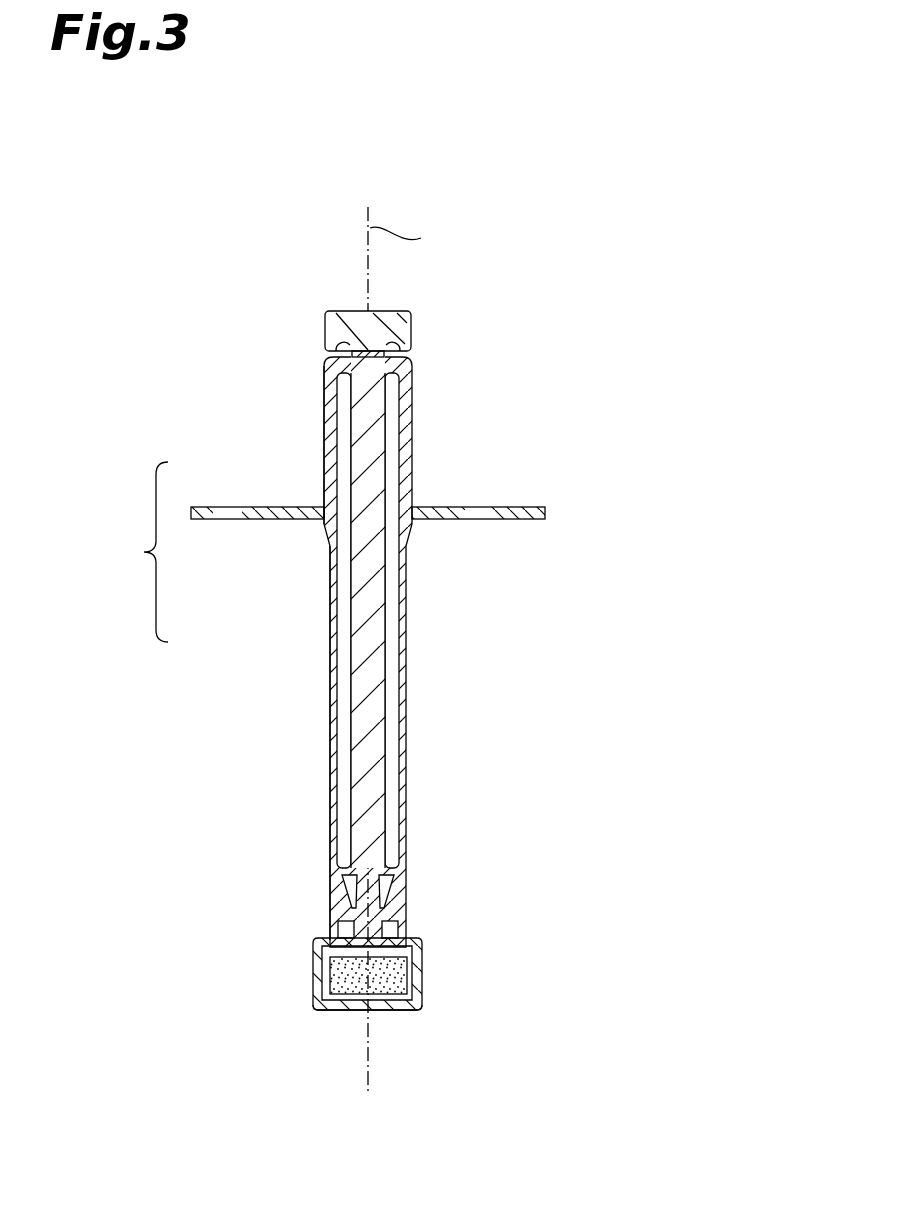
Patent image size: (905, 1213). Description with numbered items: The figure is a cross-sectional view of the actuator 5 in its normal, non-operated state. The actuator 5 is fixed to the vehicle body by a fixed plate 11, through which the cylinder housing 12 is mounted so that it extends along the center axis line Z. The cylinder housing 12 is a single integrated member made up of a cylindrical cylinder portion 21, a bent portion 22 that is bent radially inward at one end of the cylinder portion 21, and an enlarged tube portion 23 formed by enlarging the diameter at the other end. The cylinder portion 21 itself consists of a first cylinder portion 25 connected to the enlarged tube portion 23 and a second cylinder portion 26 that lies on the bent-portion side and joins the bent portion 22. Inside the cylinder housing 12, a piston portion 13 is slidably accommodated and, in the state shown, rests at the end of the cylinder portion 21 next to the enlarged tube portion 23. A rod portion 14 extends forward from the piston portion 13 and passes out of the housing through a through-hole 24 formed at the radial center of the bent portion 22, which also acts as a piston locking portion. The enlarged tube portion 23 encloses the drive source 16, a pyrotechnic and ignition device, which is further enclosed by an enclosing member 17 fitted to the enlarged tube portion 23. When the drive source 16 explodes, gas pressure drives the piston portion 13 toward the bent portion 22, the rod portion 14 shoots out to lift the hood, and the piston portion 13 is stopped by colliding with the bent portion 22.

The actuator 5 is at (537, 231).
The fixed plate 11 is at (466, 506).
The cylinder housing 12 is at (408, 622).
The piston portion 13 is at (386, 893).
The rod portion 14 is at (386, 692).
The drive source 16 is at (352, 1010).
The enclosing member 17 is at (420, 980).
The cylinder portion 21 is at (138, 552).
The bent portion 22 is at (340, 343).
The enlarged tube portion 23 is at (326, 965).
The through-hole 24 is at (380, 344).
The first cylinder portion 25 is at (330, 612).
The second cylinder portion 26 is at (326, 470).